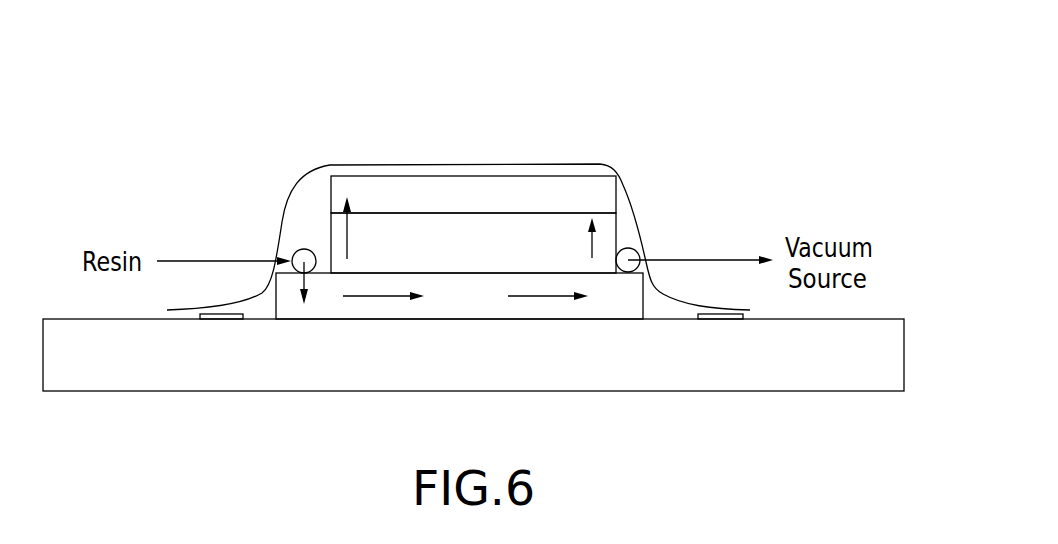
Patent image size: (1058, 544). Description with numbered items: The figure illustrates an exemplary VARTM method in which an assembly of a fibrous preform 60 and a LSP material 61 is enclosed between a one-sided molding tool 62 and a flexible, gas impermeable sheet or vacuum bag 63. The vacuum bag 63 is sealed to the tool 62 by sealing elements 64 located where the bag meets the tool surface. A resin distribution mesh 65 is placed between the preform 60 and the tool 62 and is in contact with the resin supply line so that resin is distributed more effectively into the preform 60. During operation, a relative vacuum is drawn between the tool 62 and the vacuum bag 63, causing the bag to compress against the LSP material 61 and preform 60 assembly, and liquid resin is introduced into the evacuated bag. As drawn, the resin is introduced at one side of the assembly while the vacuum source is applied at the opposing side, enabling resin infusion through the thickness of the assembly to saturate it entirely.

The fibrous preform 60 is at (473, 235).
The LSP material 61 is at (473, 194).
The one-sided molding tool 62 is at (473, 355).
The vacuum bag 63 is at (576, 160).
The sealing elements 64 is at (222, 324).
The resin distribution mesh 65 is at (459, 296).